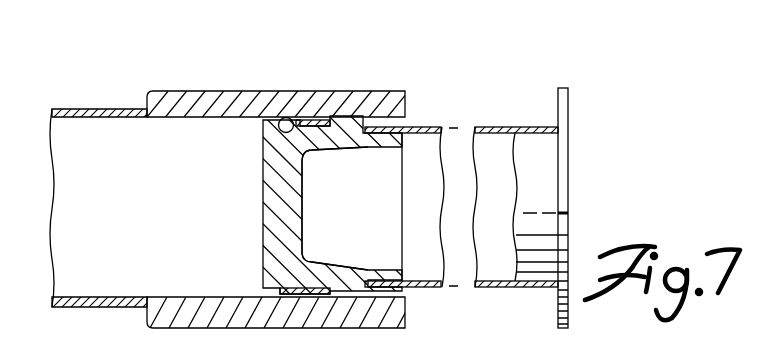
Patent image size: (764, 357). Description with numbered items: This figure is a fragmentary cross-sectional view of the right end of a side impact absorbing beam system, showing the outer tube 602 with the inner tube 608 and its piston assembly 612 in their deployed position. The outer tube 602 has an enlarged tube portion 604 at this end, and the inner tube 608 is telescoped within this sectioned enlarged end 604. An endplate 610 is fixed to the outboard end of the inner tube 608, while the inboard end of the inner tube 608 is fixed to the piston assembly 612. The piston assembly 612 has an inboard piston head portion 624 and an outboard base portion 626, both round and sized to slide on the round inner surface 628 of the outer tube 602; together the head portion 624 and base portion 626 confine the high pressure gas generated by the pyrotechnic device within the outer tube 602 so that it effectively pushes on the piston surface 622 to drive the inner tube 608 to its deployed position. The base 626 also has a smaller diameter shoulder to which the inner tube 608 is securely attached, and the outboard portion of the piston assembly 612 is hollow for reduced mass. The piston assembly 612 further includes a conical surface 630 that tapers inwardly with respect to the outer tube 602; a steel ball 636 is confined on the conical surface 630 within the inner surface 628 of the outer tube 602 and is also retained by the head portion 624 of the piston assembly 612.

The outer tube 602 is at (108, 115).
The enlarged tube portion 604 is at (330, 90).
The inner tube 608 is at (500, 125).
The endplate 610 is at (568, 126).
The piston assembly 612 is at (250, 215).
The piston surface 622 is at (262, 152).
The piston head portion 624 is at (273, 117).
The base portion 626 is at (372, 89).
The inner surface 628 is at (409, 289).
The conical surface 630 is at (303, 278).
The steel ball 636 is at (290, 118).